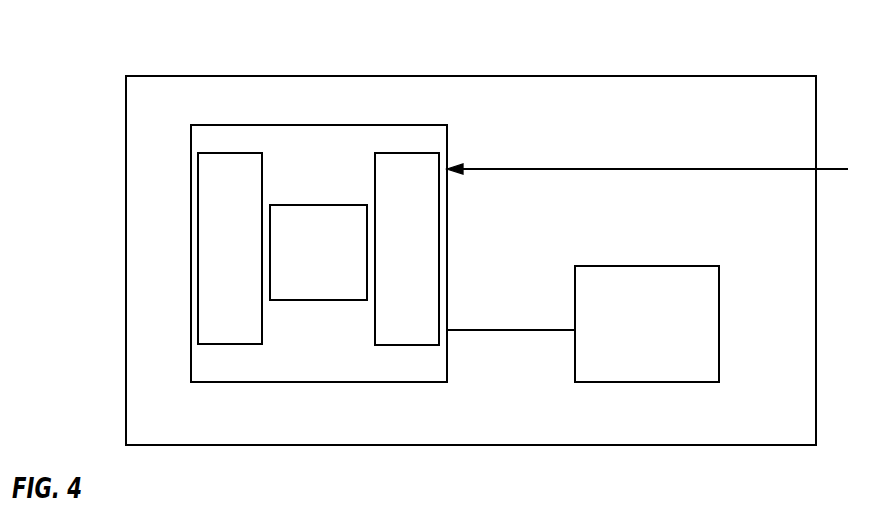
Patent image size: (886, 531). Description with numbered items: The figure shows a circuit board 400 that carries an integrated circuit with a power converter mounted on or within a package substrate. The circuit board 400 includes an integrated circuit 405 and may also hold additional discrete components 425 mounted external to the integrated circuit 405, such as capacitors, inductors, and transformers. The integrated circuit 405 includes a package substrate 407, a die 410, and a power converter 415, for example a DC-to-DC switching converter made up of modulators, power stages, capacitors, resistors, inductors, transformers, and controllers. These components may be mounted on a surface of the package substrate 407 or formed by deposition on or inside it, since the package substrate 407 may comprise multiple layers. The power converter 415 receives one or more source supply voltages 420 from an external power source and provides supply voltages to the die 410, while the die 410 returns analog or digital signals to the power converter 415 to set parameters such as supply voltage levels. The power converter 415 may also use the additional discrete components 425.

The circuit board 400 is at (126, 165).
The integrated circuit 405 is at (187, 323).
The package substrate 407 is at (258, 194).
The die 410 is at (329, 218).
The power converter 415 is at (238, 160).
The source supply voltages 420 is at (529, 169).
The additional discrete components 425 is at (645, 266).